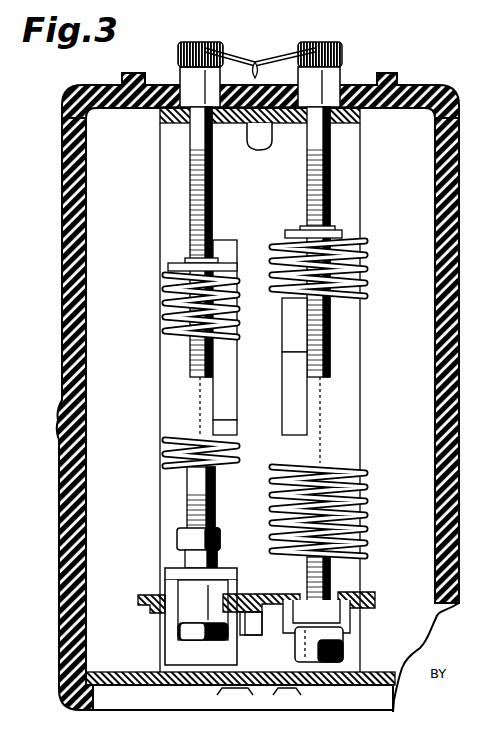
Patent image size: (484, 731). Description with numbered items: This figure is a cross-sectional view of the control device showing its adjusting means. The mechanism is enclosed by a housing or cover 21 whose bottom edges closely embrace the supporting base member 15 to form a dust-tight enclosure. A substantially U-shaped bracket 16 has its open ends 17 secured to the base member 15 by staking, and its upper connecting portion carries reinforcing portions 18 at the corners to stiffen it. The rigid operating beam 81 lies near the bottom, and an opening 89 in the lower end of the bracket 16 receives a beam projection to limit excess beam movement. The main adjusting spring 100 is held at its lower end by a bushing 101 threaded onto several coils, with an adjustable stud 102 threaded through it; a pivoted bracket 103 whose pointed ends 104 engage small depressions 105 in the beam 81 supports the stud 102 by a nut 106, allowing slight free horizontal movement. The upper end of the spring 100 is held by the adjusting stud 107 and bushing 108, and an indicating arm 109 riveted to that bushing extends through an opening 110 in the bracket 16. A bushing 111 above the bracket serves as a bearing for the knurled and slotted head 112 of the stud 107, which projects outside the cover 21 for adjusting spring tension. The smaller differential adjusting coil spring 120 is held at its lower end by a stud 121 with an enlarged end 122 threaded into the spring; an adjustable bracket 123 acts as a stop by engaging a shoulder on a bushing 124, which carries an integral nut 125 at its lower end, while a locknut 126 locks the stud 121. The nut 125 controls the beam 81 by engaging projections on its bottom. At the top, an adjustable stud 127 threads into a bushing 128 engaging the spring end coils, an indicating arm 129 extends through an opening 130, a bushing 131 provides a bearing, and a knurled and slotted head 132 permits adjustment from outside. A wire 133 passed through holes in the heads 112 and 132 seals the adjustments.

The supporting base member 15 is at (133, 650).
The U-shaped bracket 16 is at (160, 155).
The open ends 17 is at (217, 690).
The reinforcing portions 18 is at (258, 148).
The housing or cover 21 is at (64, 237).
The operating beam 81 is at (275, 600).
The opening 89 is at (260, 630).
The main adjusting spring 100 is at (357, 275).
The bushing 101 is at (350, 537).
The adjustable stud 102 is at (330, 575).
The pivoted bracket 103 is at (350, 622).
The pointed ends 104 is at (290, 610).
The small depressions 105 is at (362, 592).
The nut 106 is at (348, 648).
The adjusting stud 107 is at (320, 144).
The bushing 108 is at (338, 230).
The indicating arm 109 is at (295, 333).
The opening 110 is at (295, 403).
The bushing 111 is at (322, 82).
The knurled and slotted head 112 is at (340, 48).
The differential adjusting coil spring 120 is at (175, 315).
The stud 121 is at (190, 482).
The enlarged end 122 is at (176, 452).
The adjustable bracket 123 is at (168, 574).
The bushing 124 is at (198, 557).
The integral nut 125 is at (180, 628).
The locknut 126 is at (180, 545).
The adjustable stud 127 is at (192, 203).
The bushing 128 is at (186, 262).
The indicating arm 129 is at (222, 383).
The opening 130 is at (214, 428).
The bushing 131 is at (192, 78).
The knurled and slotted head 132 is at (208, 50).
The wire 133 is at (268, 48).